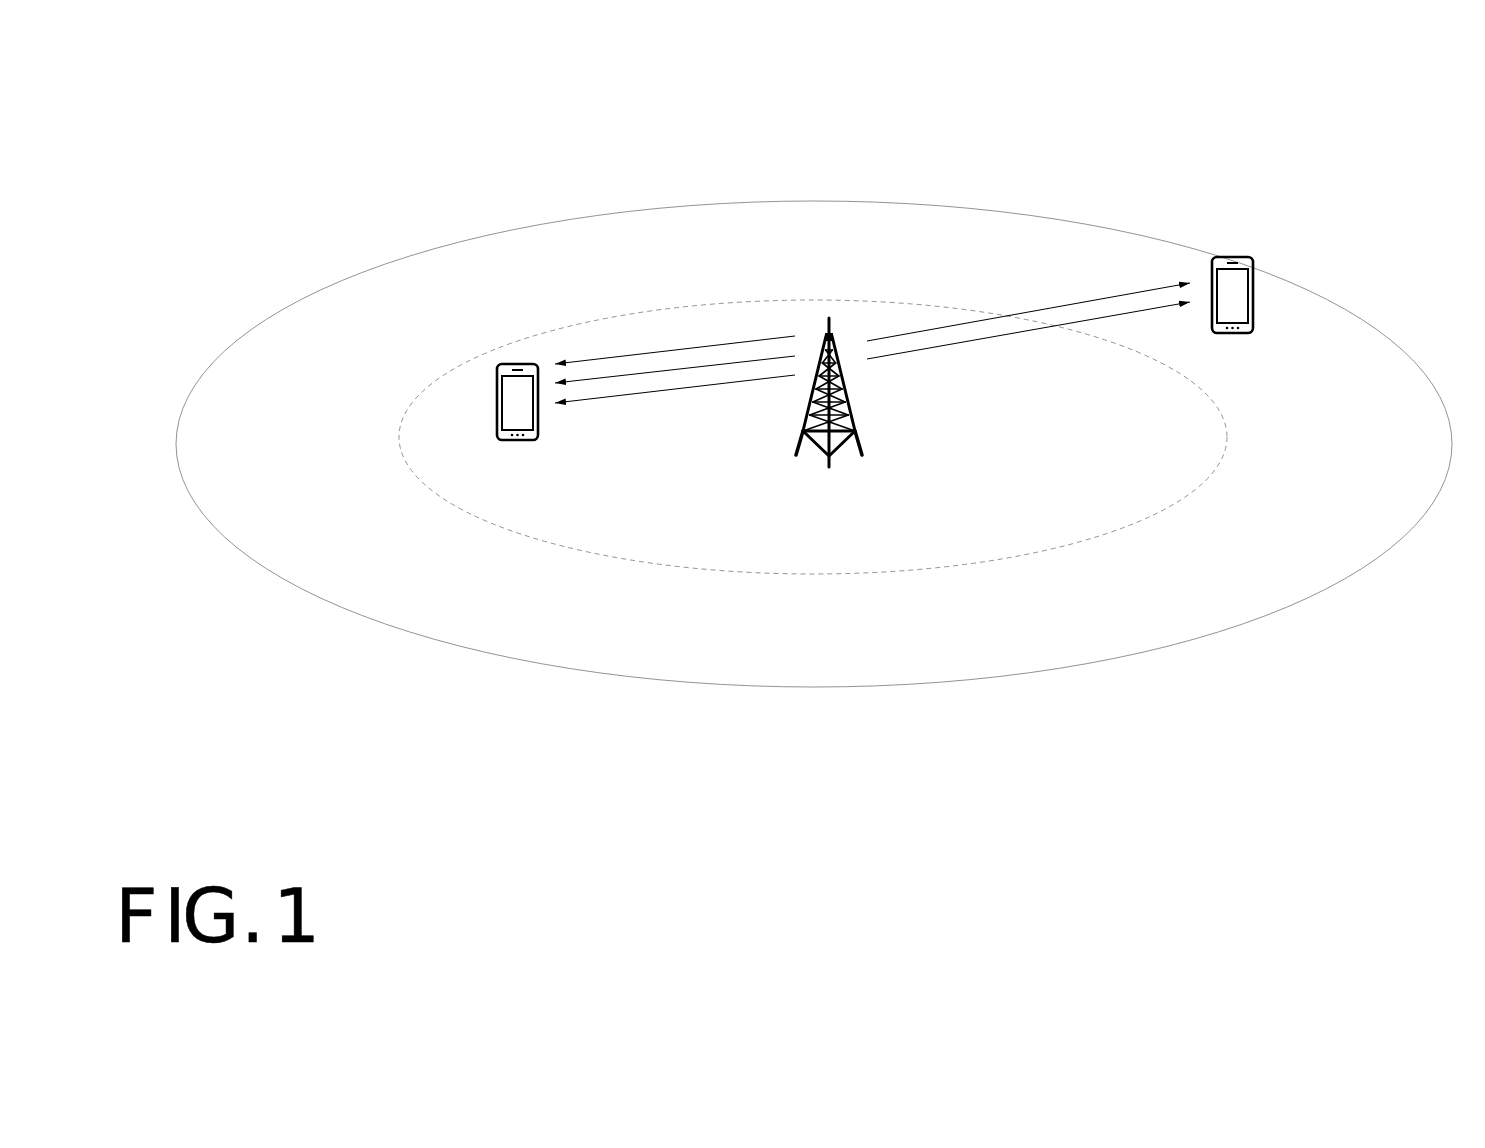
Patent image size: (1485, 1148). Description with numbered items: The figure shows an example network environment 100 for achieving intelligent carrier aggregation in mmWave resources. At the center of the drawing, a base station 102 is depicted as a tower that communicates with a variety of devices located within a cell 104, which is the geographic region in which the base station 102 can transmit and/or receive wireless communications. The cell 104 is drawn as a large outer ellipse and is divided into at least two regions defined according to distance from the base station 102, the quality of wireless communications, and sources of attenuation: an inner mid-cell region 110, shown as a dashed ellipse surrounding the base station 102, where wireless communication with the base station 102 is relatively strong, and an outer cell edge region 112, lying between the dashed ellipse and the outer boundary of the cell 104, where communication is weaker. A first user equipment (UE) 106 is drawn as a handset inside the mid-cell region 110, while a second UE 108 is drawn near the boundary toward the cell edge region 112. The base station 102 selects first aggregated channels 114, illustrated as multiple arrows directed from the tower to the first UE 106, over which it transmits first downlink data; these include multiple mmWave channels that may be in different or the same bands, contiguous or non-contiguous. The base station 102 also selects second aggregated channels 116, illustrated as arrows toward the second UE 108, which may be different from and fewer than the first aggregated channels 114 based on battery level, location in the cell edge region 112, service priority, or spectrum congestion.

The network environment 100 is at (212, 78).
The base station 102 is at (803, 440).
The cell 104 is at (758, 687).
The first user equipment (UE) 106 is at (497, 413).
The second UE 108 is at (1277, 340).
The mid-cell region 110 is at (813, 437).
The cell edge region 112 is at (315, 444).
The first aggregated channels 114 is at (678, 322).
The second aggregated channels 116 is at (1039, 250).